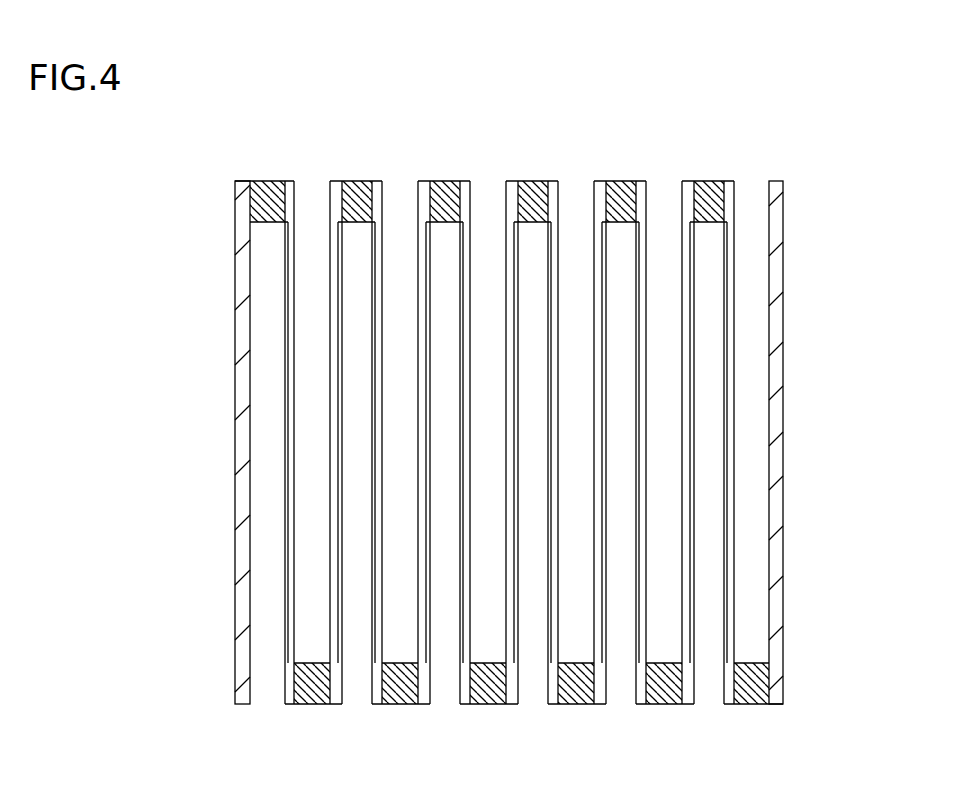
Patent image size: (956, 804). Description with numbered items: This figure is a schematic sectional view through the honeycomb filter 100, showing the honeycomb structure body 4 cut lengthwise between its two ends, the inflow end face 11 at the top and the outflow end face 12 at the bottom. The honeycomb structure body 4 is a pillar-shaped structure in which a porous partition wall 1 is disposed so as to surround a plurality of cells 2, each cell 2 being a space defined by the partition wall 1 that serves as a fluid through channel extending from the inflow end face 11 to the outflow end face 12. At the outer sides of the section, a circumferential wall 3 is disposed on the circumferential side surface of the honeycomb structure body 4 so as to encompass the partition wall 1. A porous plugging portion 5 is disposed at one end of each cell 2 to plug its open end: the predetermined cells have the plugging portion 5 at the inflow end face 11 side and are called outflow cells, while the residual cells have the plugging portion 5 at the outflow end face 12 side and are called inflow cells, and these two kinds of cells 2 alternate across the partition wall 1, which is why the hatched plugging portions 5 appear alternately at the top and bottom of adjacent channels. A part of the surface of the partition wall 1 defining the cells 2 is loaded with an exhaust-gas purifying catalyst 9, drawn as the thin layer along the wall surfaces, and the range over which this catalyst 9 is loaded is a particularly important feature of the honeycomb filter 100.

The honeycomb filter 100 is at (864, 54).
The partition wall 1 is at (640, 198).
The cells 2 is at (570, 245).
The circumferential wall 3 is at (248, 330).
The honeycomb structure body 4 is at (796, 186).
The plugging portion 5 is at (268, 197).
The exhaust-gas purifying catalyst 9 is at (723, 400).
The inflow end face 11 is at (260, 169).
The outflow end face 12 is at (273, 720).